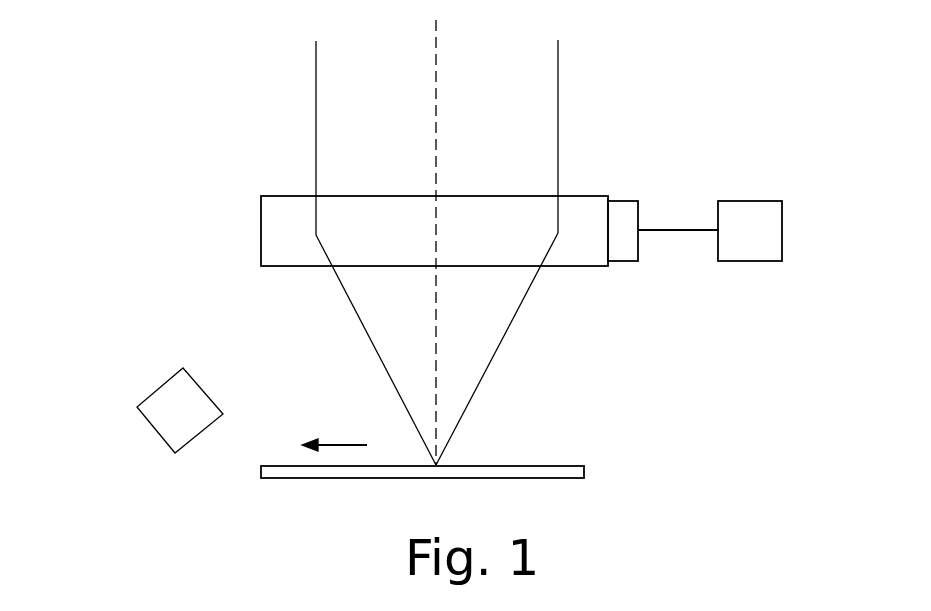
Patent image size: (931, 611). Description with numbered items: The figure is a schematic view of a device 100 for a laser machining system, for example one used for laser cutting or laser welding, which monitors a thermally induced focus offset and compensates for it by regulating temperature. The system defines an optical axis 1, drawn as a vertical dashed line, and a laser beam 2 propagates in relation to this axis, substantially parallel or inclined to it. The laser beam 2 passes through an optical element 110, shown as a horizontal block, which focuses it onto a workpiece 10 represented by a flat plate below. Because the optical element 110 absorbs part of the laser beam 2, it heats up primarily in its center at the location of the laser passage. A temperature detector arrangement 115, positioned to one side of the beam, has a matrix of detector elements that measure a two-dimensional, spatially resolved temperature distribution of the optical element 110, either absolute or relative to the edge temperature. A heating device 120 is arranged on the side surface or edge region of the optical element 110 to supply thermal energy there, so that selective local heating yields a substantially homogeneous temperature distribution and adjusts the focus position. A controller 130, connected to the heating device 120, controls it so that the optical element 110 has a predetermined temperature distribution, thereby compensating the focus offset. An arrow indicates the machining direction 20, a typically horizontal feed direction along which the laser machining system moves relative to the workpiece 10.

The optical axis 1 is at (436, 112).
The laser beam 2 is at (558, 98).
The workpiece 10 is at (584, 470).
The machining direction 20 is at (340, 445).
The device 100 is at (701, 111).
The optical element 110 is at (261, 232).
The temperature detector arrangement 115 is at (162, 387).
The heating device 120 is at (620, 261).
The controller 130 is at (743, 261).